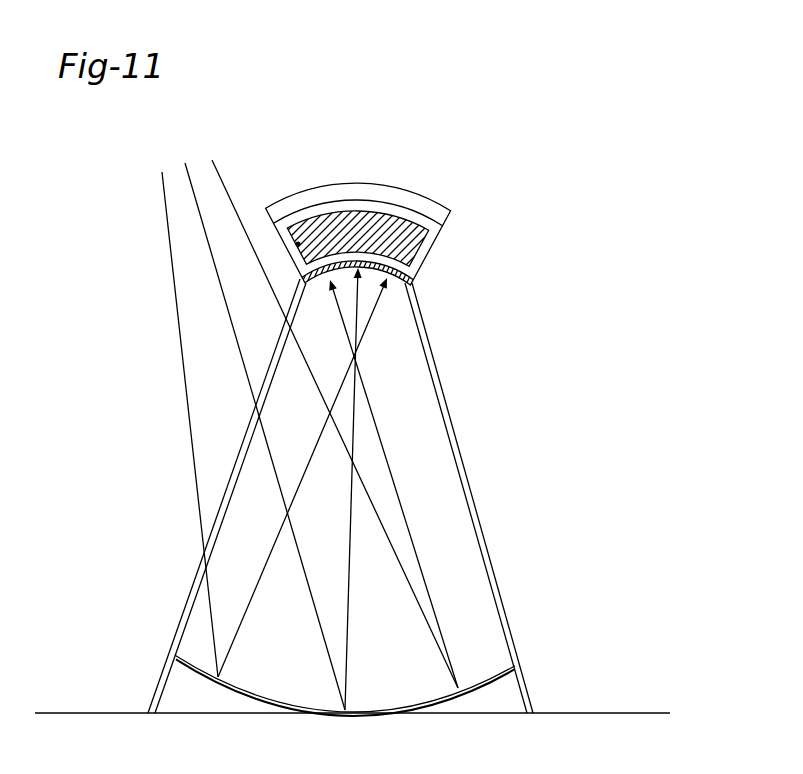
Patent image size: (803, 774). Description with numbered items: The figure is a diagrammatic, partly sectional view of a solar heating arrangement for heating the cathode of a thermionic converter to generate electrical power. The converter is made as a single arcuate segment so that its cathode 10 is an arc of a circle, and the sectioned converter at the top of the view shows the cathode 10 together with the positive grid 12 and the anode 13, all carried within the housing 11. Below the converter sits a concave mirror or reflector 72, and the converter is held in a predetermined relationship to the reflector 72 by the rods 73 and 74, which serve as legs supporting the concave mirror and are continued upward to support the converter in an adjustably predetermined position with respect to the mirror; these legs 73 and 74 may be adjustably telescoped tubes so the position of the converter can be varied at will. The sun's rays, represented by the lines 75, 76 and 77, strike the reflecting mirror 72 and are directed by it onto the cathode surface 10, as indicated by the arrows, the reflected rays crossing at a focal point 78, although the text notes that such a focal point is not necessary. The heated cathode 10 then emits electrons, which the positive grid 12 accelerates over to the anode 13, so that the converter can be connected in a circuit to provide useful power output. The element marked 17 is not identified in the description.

The cathode 10 is at (398, 271).
The housing 11 is at (275, 207).
The positive grid 12 is at (403, 231).
The anode 13 is at (376, 200).
The passage 17 is at (297, 244).
The reflector 72 is at (422, 712).
The rod 73 is at (192, 593).
The rod 74 is at (490, 565).
The line 75 is at (264, 415).
The line 76 is at (268, 428).
The line 77 is at (329, 412).
The focal point 78 is at (358, 357).